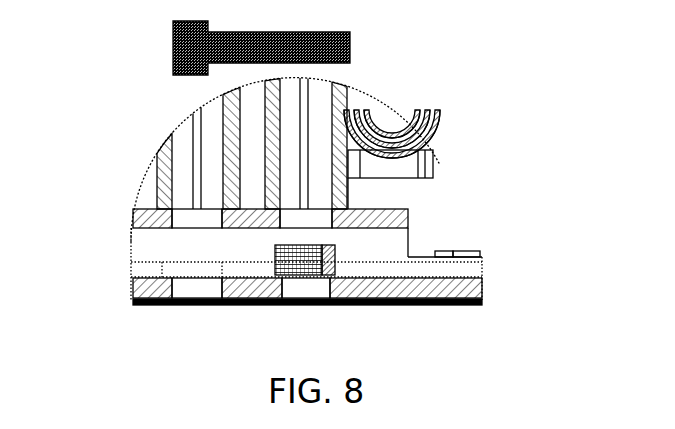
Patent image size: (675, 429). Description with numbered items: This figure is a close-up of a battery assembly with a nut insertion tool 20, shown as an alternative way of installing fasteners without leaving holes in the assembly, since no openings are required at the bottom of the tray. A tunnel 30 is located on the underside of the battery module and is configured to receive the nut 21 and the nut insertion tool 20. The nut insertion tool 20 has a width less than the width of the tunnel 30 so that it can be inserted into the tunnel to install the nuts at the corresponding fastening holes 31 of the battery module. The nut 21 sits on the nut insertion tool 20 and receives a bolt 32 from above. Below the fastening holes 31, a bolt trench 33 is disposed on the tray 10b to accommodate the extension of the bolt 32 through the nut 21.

The tunnel 30 is at (137, 242).
The fastening hole 31 is at (187, 217).
The bolt 32 is at (190, 53).
The nut 21 is at (337, 253).
The nut insertion tool 20 is at (466, 259).
The tray 10b is at (478, 297).
The bolt trench 33 is at (176, 296).